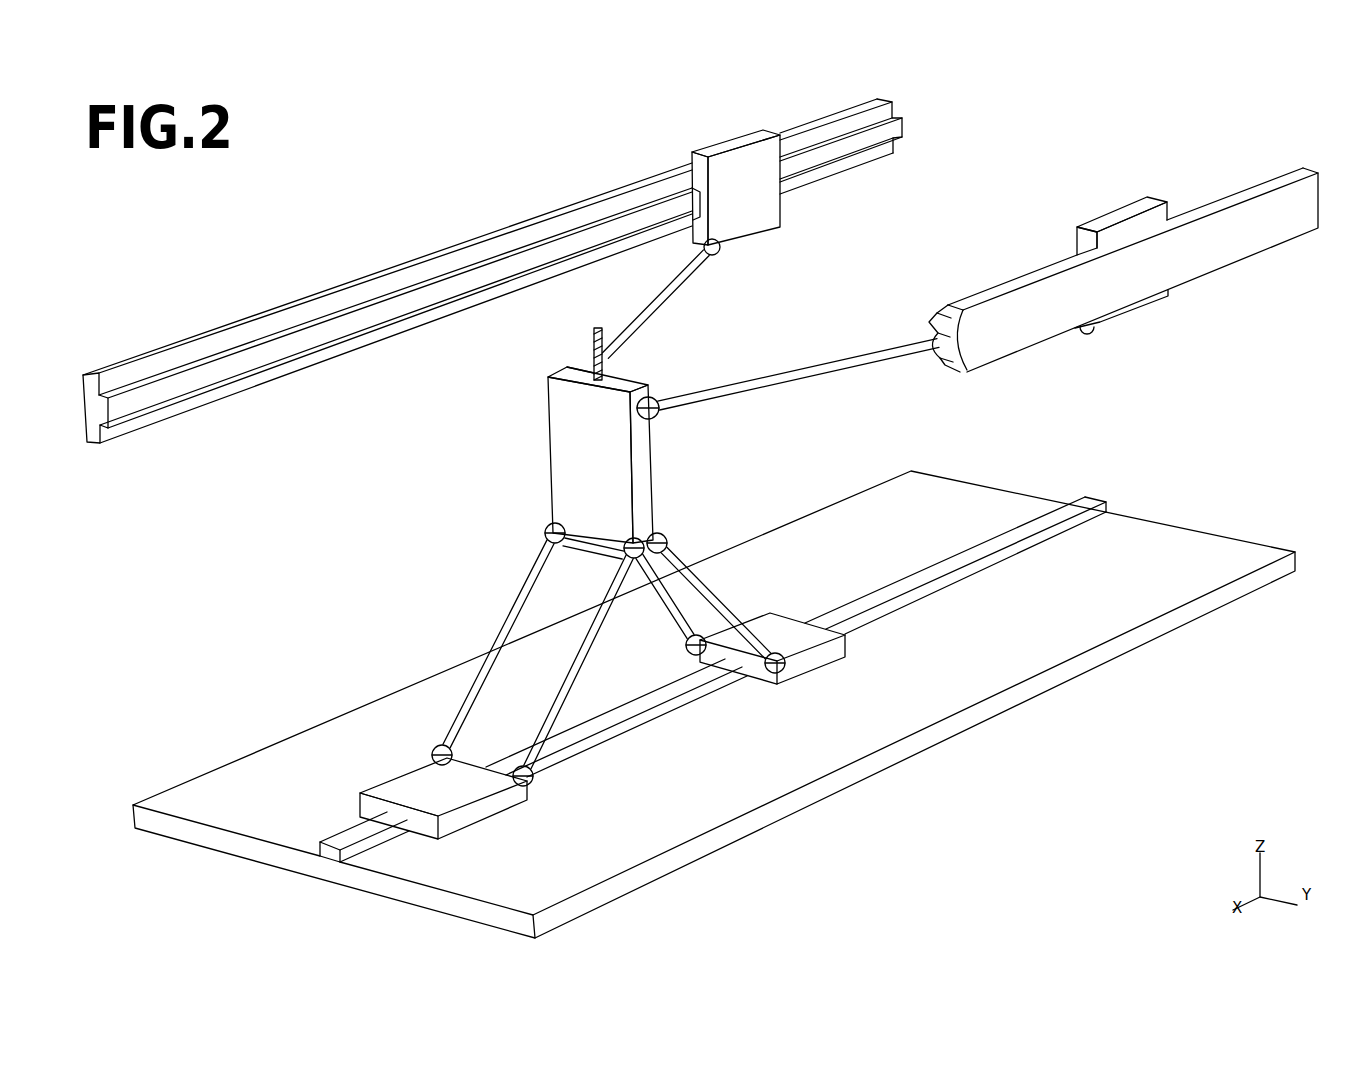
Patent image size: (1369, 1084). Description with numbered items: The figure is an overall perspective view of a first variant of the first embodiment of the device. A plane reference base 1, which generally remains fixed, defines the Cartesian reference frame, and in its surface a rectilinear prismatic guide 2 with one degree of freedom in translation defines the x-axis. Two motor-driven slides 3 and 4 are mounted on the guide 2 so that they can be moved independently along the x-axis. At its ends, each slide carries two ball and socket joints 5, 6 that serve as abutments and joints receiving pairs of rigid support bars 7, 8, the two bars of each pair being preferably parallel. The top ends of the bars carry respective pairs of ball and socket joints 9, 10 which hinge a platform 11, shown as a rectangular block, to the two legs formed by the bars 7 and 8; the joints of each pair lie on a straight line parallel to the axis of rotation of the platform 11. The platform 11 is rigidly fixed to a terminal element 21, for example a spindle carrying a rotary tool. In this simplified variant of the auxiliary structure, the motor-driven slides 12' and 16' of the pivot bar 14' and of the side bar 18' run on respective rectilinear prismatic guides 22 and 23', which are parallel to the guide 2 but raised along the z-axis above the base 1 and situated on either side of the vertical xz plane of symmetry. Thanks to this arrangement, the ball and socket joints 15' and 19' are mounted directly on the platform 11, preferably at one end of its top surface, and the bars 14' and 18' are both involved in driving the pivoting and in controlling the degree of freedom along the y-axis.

The reference base 1 is at (1152, 589).
The prismatic guide 2 is at (925, 585).
The motor-driven slide 3 is at (483, 808).
The motor-driven slide 4 is at (822, 660).
The ball and socket joints 5 is at (432, 756).
The ball and socket joints 6 is at (687, 655).
The rigid support bars 7 is at (507, 620).
The rigid support bars 8 is at (658, 612).
The ball and socket joints 9 is at (540, 534).
The ball and socket joints 10 is at (667, 533).
The platform 11 is at (565, 483).
The motor-driven slide 12' is at (1120, 252).
The pivot bar 14' is at (798, 384).
The ball and socket joint 15' is at (676, 431).
The motor-driven slide 16' is at (750, 201).
The side bar 18' is at (662, 298).
The ball and socket joint 19' is at (543, 367).
The terminal element 21 is at (587, 350).
The prismatic guide 22 is at (930, 327).
The prismatic guide 23' is at (526, 271).